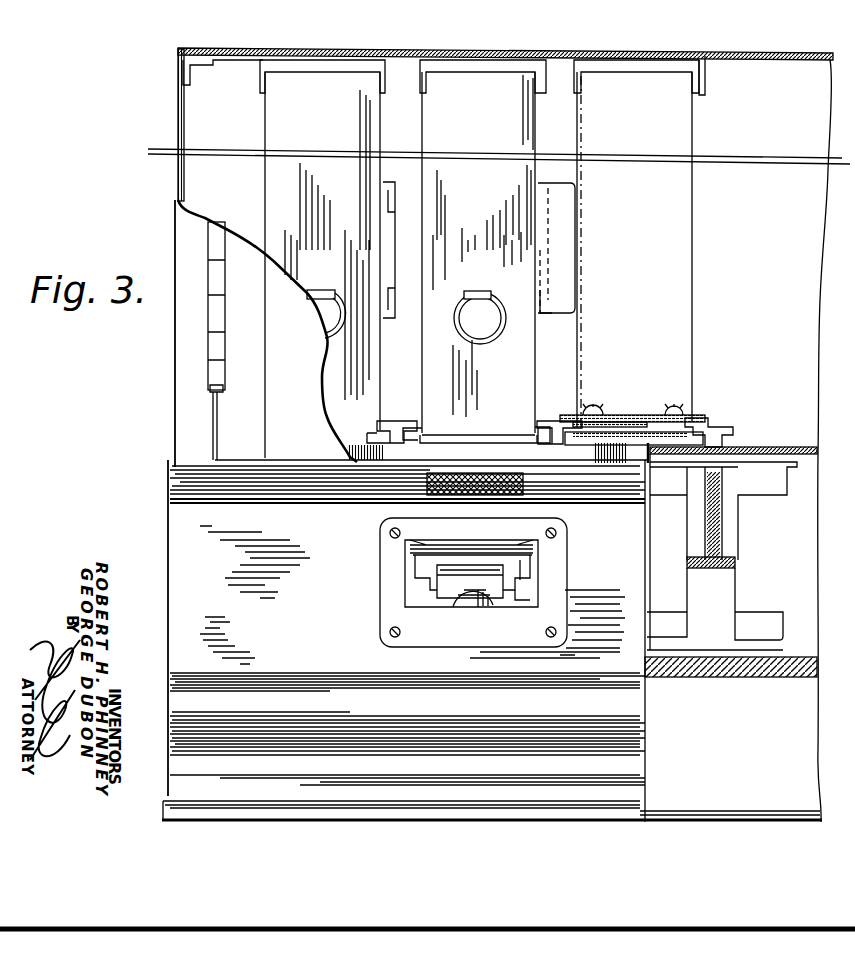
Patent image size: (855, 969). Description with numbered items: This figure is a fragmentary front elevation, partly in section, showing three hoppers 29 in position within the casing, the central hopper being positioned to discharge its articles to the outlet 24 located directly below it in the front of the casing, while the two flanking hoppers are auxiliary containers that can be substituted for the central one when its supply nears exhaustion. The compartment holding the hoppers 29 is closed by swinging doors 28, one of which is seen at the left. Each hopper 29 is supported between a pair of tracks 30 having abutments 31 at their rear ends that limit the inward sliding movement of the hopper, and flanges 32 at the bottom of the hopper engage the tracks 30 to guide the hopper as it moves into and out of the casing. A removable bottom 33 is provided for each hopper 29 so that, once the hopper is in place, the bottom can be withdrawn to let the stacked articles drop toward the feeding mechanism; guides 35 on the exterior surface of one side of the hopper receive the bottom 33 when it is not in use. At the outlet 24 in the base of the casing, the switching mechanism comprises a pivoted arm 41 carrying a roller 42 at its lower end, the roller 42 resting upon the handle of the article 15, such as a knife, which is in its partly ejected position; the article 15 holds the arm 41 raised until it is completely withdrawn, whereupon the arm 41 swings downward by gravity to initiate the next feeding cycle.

The hopper 29 is at (277, 182).
The swinging door 28 is at (237, 334).
The guide 35 is at (383, 273).
The track 30 is at (390, 418).
The abutment 31 is at (633, 437).
The removable bottom 33 is at (478, 433).
The flange 32 is at (408, 445).
The pivoted arm 41 is at (442, 558).
The roller 42 is at (440, 584).
The outlet 24 is at (530, 588).
The article 15 is at (470, 600).